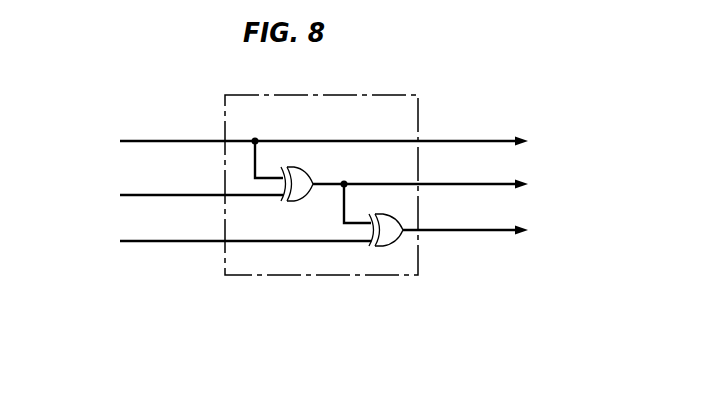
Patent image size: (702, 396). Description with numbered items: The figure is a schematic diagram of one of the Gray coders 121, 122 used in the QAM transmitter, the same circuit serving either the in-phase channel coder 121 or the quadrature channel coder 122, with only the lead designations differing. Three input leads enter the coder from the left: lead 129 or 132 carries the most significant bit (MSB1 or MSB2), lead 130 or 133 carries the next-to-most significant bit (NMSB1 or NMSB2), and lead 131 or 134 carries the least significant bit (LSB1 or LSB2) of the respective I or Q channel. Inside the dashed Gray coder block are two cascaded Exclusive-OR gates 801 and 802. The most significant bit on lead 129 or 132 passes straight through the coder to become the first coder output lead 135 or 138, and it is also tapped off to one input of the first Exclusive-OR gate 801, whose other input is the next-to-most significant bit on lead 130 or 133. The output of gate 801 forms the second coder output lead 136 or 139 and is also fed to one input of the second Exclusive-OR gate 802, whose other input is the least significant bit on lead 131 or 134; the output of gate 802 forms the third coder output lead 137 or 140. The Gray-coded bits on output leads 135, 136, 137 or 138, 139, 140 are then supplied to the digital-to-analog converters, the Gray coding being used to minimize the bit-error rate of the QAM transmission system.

The gray coder 121 is at (323, 276).
The gray coder 122 is at (321, 208).
The lead 129 is at (236, 144).
The lead 130 is at (169, 180).
The lead 131 is at (213, 227).
The lead 132 is at (159, 141).
The lead 133 is at (159, 195).
The lead 134 is at (158, 241).
The coder output lead 135 is at (486, 140).
The coder output lead 136 is at (484, 184).
The coder output lead 137 is at (486, 229).
The coder output lead 138 is at (501, 128).
The coder output lead 139 is at (449, 188).
The coder output lead 140 is at (494, 216).
The Exclusive-OR gate 801 is at (306, 172).
The Exclusive-OR gate 802 is at (367, 215).